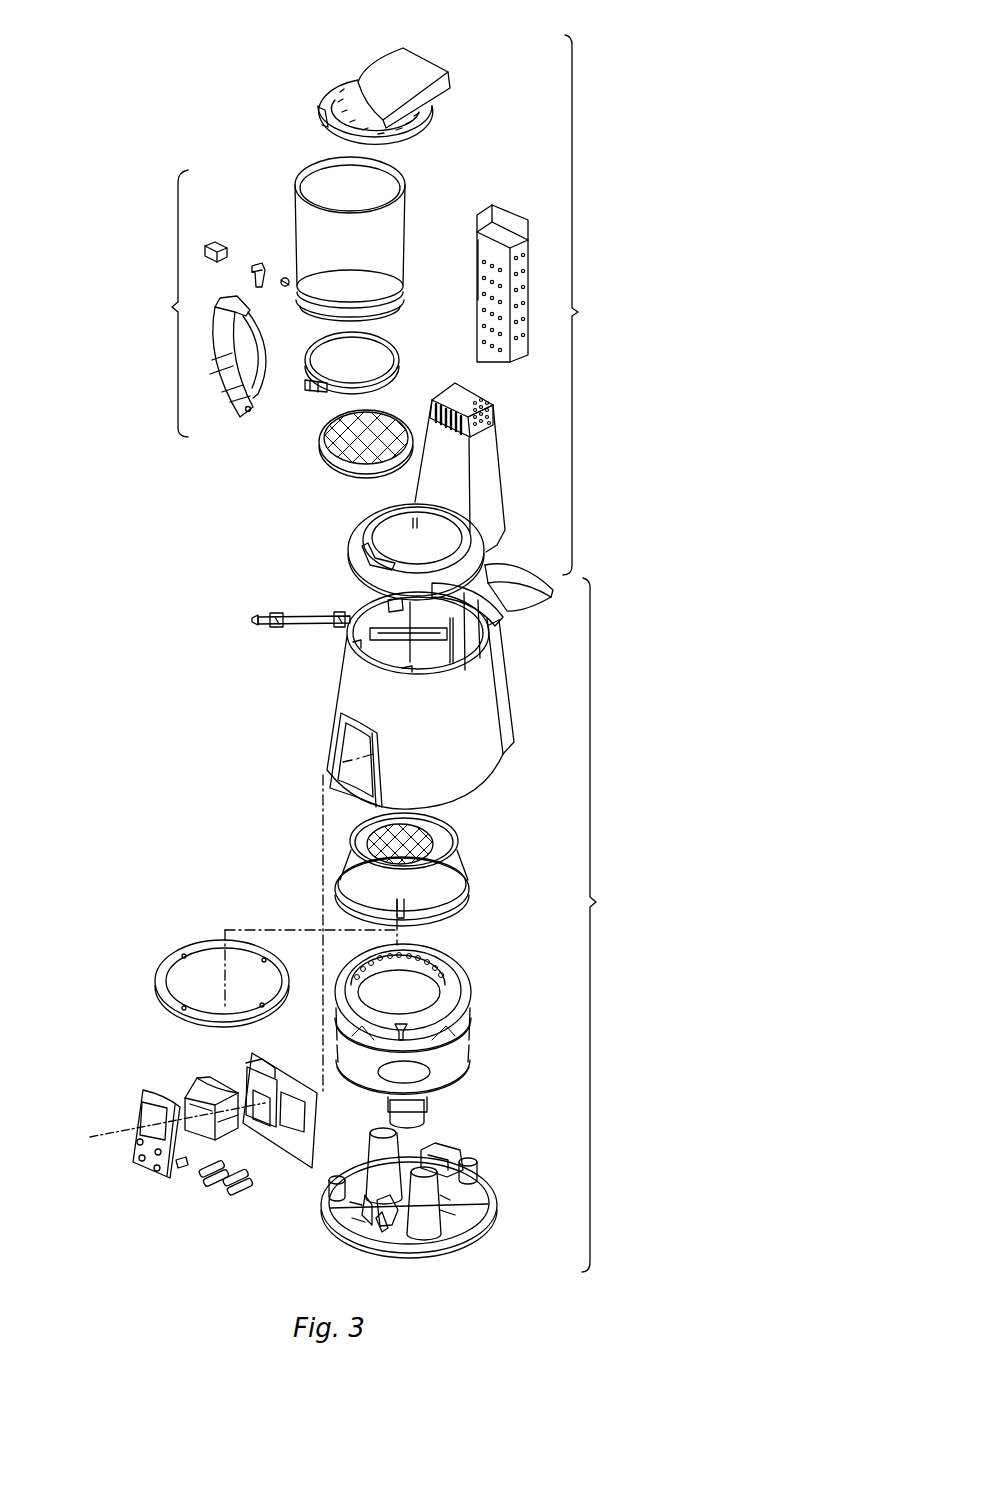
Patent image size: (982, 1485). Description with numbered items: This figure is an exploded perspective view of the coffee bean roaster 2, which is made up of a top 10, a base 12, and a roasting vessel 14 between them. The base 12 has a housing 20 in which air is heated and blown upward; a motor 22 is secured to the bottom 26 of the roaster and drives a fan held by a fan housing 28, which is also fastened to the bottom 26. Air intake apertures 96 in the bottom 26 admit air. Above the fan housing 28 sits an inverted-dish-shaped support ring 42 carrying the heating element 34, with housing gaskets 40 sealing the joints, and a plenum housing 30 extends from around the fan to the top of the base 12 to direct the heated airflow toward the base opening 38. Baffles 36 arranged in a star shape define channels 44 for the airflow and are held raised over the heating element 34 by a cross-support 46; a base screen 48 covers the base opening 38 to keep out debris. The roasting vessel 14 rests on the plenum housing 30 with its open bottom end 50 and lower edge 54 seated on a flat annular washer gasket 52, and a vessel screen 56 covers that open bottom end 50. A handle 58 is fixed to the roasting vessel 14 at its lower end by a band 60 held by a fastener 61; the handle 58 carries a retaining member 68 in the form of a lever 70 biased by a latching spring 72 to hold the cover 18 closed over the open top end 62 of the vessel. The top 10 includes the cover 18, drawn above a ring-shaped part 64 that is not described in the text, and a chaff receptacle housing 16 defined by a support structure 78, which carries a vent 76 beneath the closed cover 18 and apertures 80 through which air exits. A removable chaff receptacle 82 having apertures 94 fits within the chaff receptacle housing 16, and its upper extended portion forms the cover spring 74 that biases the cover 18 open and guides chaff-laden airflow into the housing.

The coffee bean roaster 2 is at (652, 465).
The top 10 is at (594, 305).
The base 12 is at (612, 925).
The roasting vessel 14 is at (159, 303).
The chaff receptacle housing 16 is at (493, 460).
The cover 18 is at (418, 63).
The housing 20 is at (467, 770).
The motor 22 is at (413, 1123).
The bottom 26 is at (440, 1243).
The fan housing 28 is at (463, 1077).
The plenum housing 30 is at (352, 846).
The heating element 34 is at (440, 955).
The baffles 36 is at (397, 637).
The base opening 38 is at (400, 535).
The housing gaskets 40 is at (340, 1033).
The support ring 42 is at (453, 1013).
The channels 44 is at (367, 607).
The cross-support 46 is at (277, 620).
The base screen 48 is at (425, 823).
The open bottom end 50 is at (390, 313).
The washer gasket 52 is at (375, 832).
The lower edge 54 is at (398, 290).
The vessel screen 56 is at (352, 445).
The handle 58 is at (227, 395).
The band 60 is at (333, 393).
The fastener 61 is at (307, 387).
The open top end 62 is at (328, 175).
The lid ring 64 is at (378, 78).
The retaining member 68 is at (290, 270).
The lever 70 is at (220, 260).
The latching spring 72 is at (252, 282).
The cover spring 74 is at (525, 228).
The vent 76 is at (420, 410).
The support structure 78 is at (480, 504).
The apertures 80 is at (482, 393).
The chaff receptacle 82 is at (478, 257).
The apertures 94 is at (527, 278).
The air intake aperture 96 is at (383, 1230).